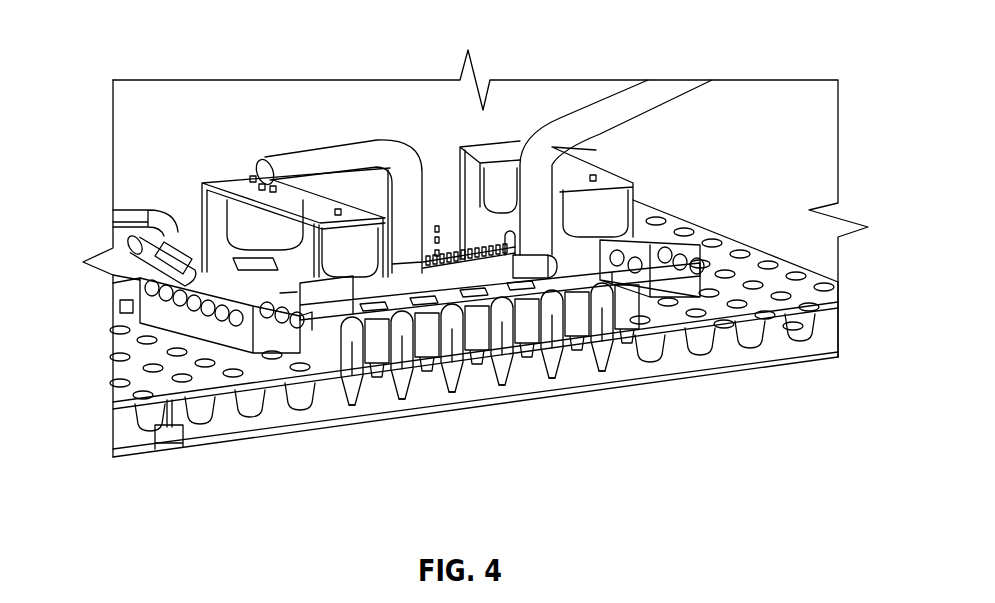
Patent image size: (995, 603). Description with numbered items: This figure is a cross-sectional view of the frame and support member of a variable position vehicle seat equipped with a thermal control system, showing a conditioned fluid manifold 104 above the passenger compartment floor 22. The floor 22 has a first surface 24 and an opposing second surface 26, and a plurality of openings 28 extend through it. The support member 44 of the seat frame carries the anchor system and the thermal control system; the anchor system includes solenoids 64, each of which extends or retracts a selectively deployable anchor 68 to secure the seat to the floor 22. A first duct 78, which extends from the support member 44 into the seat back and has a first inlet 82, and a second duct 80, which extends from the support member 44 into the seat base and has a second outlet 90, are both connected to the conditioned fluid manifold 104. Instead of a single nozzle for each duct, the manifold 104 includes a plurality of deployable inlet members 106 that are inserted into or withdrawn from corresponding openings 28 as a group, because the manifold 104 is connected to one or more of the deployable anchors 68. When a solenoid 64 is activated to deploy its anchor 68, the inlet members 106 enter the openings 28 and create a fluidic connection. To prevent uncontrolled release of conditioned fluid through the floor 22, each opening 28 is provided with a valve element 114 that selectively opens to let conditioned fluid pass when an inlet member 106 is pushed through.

The floor 22 is at (474, 330).
The first surface 24 is at (827, 297).
The second surface 26 is at (220, 395).
The opening 28 is at (727, 270).
The support member 44 is at (200, 230).
The solenoid 64 is at (263, 158).
The selectively deployable anchor 68 is at (307, 380).
The first duct 78 is at (330, 138).
The second duct 80 is at (585, 115).
The first inlet 82 is at (410, 255).
The second outlet 90 is at (533, 223).
The conditioned fluid manifold 104 is at (497, 277).
The deployable inlet member 106 is at (602, 372).
The valve element 114 is at (400, 413).